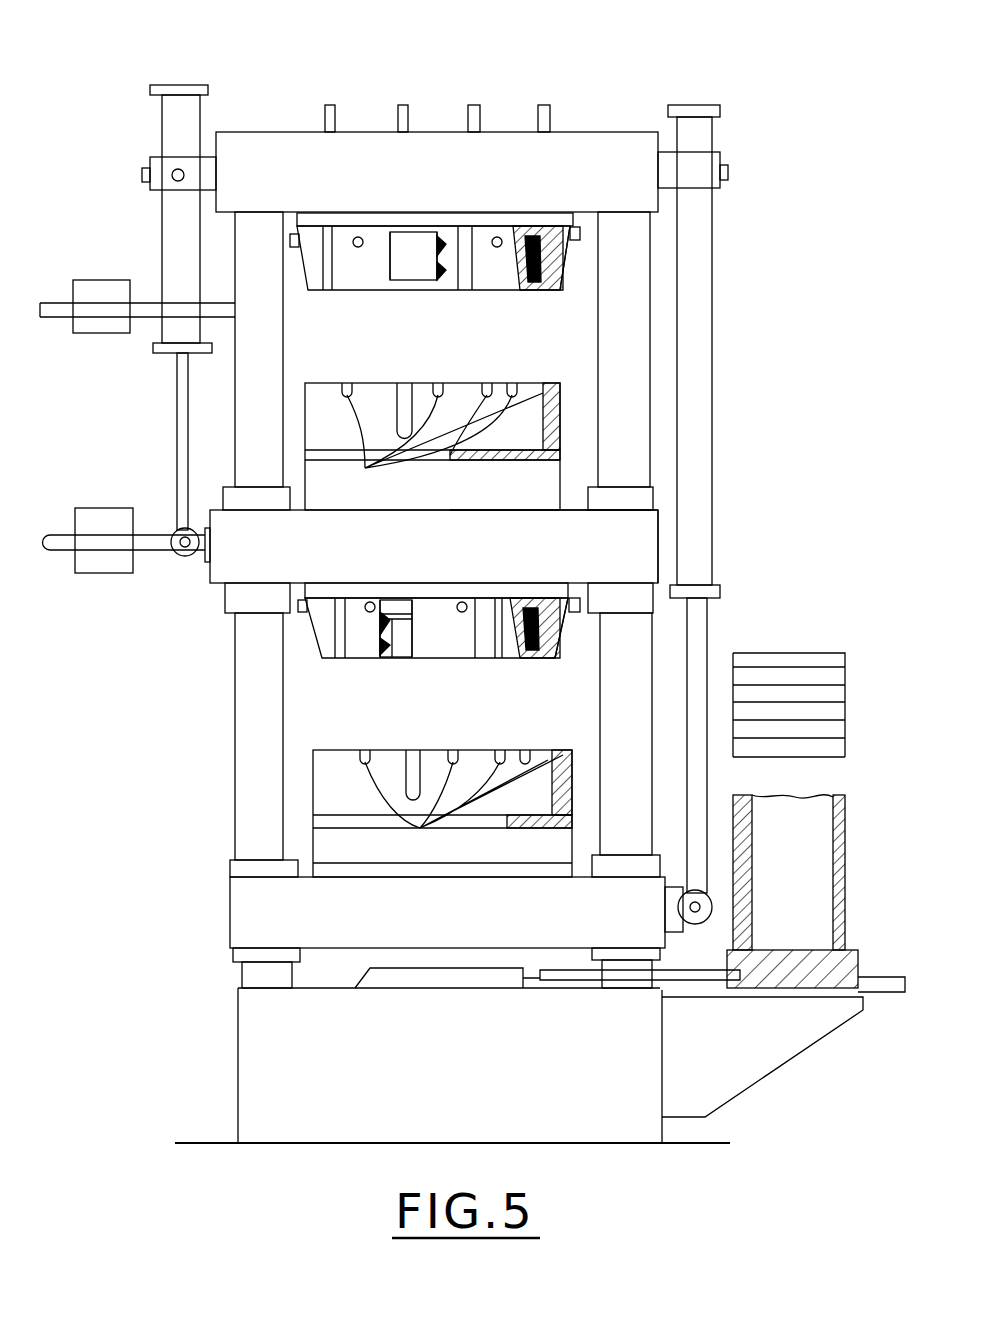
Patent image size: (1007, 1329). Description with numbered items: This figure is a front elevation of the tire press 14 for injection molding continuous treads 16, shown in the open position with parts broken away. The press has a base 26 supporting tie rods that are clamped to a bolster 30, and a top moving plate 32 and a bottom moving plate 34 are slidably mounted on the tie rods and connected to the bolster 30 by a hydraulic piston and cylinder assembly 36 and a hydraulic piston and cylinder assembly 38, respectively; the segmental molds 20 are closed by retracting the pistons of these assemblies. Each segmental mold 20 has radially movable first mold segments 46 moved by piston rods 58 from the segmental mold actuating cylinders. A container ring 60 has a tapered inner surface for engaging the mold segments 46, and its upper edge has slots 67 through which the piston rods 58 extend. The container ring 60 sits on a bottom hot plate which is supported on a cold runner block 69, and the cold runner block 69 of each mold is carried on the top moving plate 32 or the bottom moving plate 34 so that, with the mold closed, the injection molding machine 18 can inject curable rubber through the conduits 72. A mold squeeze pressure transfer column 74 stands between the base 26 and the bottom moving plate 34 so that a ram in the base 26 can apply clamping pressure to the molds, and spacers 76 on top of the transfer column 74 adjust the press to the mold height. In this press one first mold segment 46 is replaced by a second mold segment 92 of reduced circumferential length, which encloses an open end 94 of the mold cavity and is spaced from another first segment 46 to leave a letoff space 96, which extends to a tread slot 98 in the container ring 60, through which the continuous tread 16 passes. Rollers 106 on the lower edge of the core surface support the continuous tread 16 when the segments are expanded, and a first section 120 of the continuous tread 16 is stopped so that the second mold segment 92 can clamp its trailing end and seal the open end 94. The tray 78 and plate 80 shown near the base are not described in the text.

The tire press 14 is at (740, 75).
The continuous tread 16 is at (412, 245).
The injection molding machine 18 is at (92, 288).
The segmental mold 20 is at (578, 236).
The base 26 is at (250, 1048).
The bolster 30 is at (610, 142).
The top moving plate 32 is at (222, 585).
The bottom moving plate 34 is at (648, 560).
The hydraulic piston and cylinder assembly 36 is at (175, 214).
The hydraulic piston and cylinder assembly 38 is at (712, 376).
The mold segment 46 is at (338, 240).
The piston rod 58 is at (292, 240).
The container ring 60 is at (312, 422).
The slot 67 is at (455, 628).
The cold runner block 69 is at (538, 502).
The conduit 72 is at (140, 306).
The mold squeeze pressure transfer column 74 is at (842, 902).
The spacer 76 is at (830, 730).
The tray 78 is at (445, 988).
The support plate 80 is at (876, 995).
The second mold segment 92 is at (508, 242).
The open end 94 is at (440, 256).
The letoff space 96 is at (440, 262).
The tread slot 98 is at (405, 402).
The roller 106 is at (532, 282).
The first section 120 is at (392, 262).